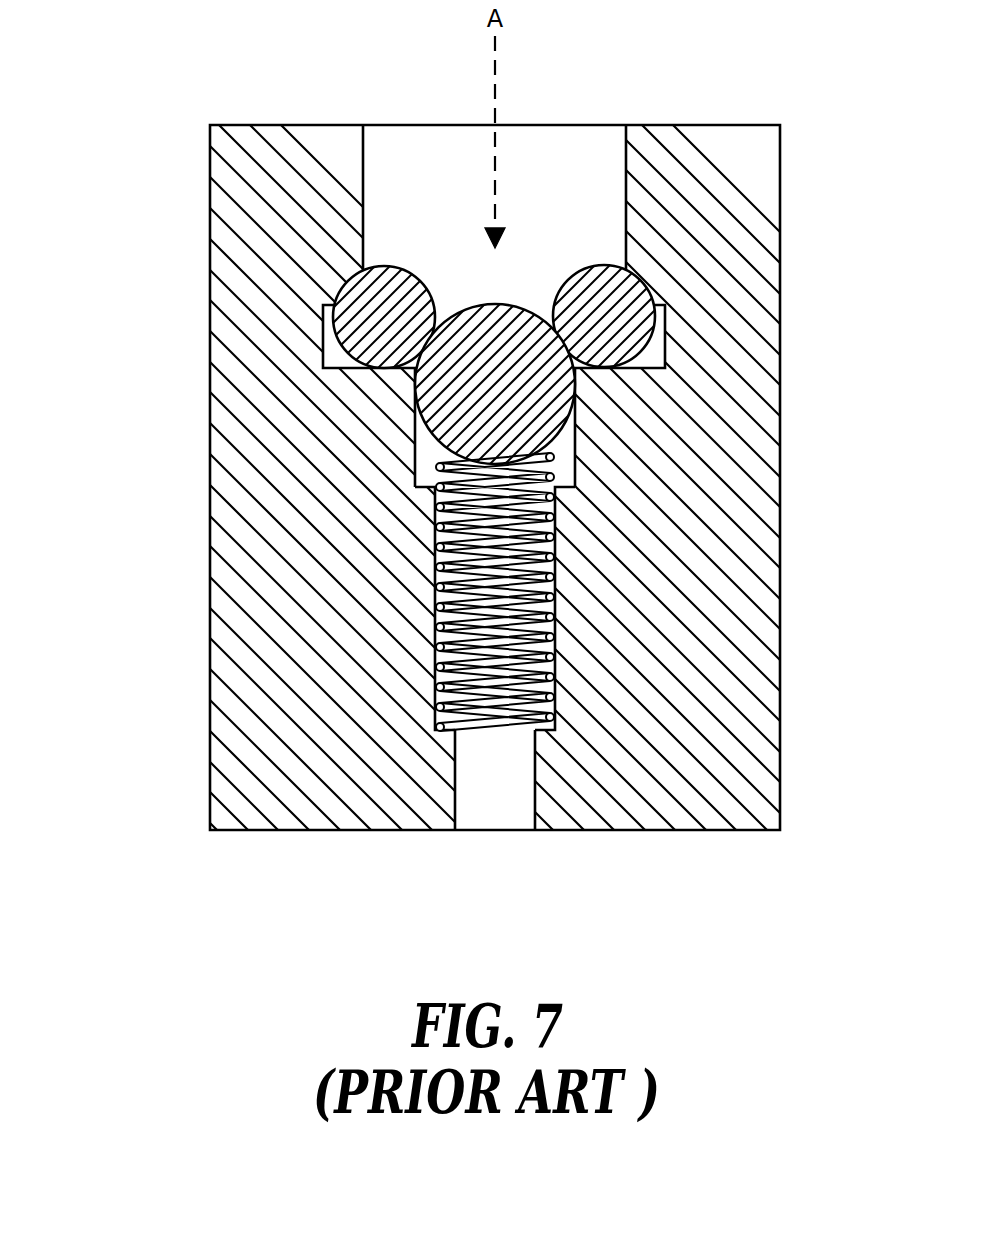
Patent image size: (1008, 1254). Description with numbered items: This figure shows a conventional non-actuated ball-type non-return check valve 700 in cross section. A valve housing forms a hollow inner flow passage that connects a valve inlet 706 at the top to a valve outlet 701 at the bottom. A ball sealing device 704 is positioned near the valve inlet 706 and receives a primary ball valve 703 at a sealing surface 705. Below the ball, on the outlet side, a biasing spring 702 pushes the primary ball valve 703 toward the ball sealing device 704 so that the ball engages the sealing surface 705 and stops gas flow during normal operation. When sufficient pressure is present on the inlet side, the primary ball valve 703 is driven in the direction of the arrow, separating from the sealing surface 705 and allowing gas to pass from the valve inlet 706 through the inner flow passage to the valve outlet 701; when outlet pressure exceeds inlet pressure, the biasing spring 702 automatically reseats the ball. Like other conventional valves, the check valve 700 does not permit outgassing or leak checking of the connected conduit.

The check valve 700 is at (200, 545).
The valve outlet 701 is at (498, 790).
The biasing spring 702 is at (515, 622).
The primary ball valve 703 is at (522, 387).
The ball sealing device 704 is at (385, 303).
The sealing surface 705 is at (395, 370).
The valve inlet 706 is at (560, 183).